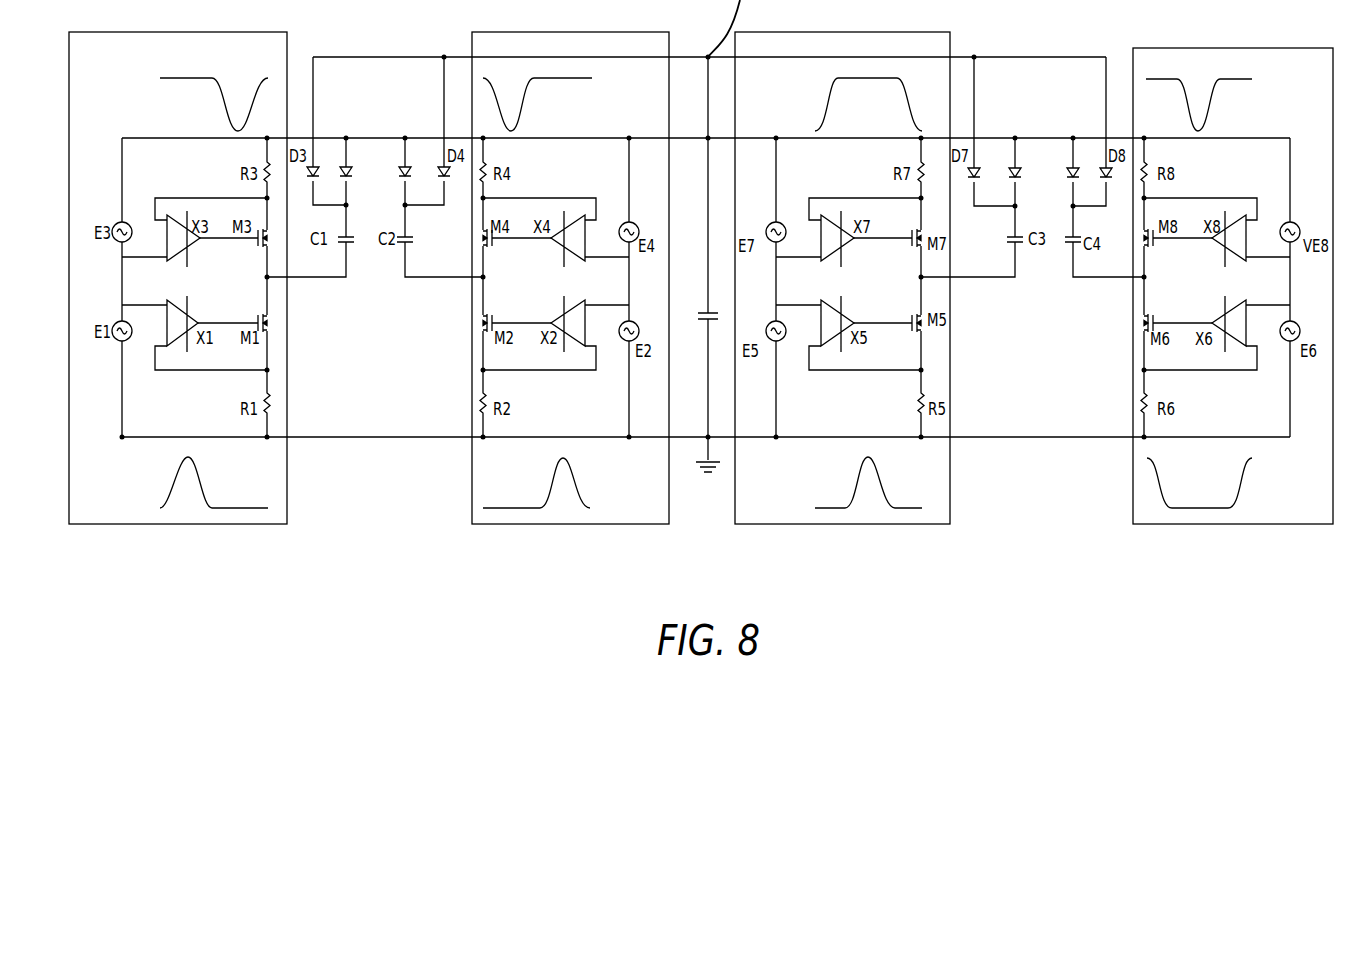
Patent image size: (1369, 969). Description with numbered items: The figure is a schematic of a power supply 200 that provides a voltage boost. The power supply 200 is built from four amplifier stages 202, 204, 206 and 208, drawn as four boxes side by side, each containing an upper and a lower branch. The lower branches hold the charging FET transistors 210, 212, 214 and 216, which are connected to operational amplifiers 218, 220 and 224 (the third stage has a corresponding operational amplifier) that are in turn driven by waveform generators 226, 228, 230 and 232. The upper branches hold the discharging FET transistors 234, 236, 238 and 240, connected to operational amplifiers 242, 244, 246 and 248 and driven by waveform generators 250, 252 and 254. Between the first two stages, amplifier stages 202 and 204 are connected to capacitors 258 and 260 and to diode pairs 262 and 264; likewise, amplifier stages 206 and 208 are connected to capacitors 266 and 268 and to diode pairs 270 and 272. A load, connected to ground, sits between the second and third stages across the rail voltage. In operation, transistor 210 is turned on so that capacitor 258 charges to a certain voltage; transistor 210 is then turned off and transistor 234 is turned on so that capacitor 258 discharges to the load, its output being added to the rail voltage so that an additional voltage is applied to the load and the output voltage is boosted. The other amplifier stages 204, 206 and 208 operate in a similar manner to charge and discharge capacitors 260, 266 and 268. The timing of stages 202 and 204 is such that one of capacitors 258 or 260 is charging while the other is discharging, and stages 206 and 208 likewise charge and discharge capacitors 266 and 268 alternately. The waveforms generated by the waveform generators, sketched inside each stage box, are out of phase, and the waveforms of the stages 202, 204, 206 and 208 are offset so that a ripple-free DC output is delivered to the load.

The power supply 200 is at (445, 560).
The amplifier stage 202 is at (168, 479).
The amplifier stage 204 is at (578, 487).
The amplifier stage 206 is at (856, 483).
The amplifier stage 208 is at (1240, 483).
The charging FET transistor 210 is at (270, 322).
The charging FET transistor 212 is at (480, 322).
The charging FET transistor 214 is at (910, 323).
The charging FET transistor 216 is at (1140, 322).
The operational amplifier 218 is at (196, 320).
The operational amplifier 220 is at (575, 320).
The operational amplifier 224 is at (1216, 320).
The waveform generator 226 is at (117, 342).
The waveform generator 228 is at (626, 343).
The waveform generator 230 is at (770, 325).
The waveform generator 232 is at (832, 318).
The discharging FET transistor 234 is at (257, 244).
The discharging FET transistor 236 is at (492, 244).
The discharging FET transistor 238 is at (910, 244).
The discharging FET transistor 240 is at (1156, 244).
The operational amplifier 242 is at (176, 226).
The operational amplifier 244 is at (572, 226).
The operational amplifier 246 is at (828, 226).
The operational amplifier 248 is at (1230, 226).
The waveform generator 250 is at (114, 224).
The waveform generator 252 is at (637, 226).
The waveform generator 254 is at (768, 228).
The capacitor 258 is at (352, 243).
The capacitor 260 is at (412, 240).
The diode pair 262 is at (346, 136).
The diode pair 264 is at (405, 136).
The capacitor 266 is at (1008, 240).
The capacitor 268 is at (1068, 243).
The diode pair 270 is at (1015, 136).
The diode pair 272 is at (1073, 136).